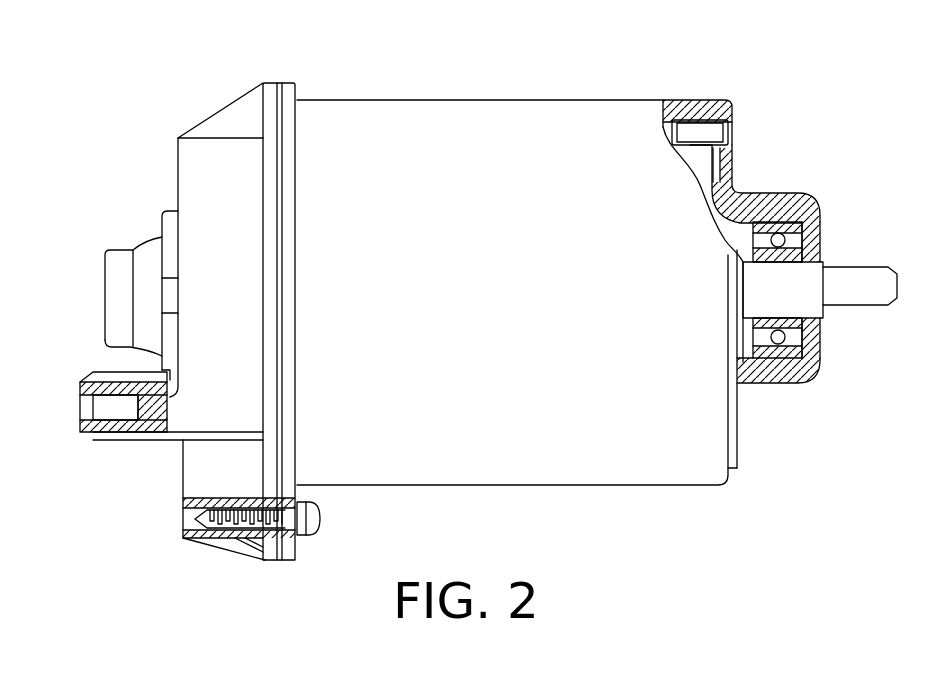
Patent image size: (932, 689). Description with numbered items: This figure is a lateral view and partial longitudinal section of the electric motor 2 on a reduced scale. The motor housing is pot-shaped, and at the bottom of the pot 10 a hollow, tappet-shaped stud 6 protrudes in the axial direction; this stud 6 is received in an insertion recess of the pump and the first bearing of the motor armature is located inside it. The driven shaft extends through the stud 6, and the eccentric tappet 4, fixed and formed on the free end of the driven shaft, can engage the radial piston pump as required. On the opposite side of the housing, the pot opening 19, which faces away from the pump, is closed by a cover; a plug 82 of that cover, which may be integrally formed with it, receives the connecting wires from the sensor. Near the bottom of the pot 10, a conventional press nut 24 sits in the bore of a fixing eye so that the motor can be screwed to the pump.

The electric motor 2 is at (608, 97).
The eccentric tappet 4 is at (860, 272).
The hollow tappet-shaped stud 6 is at (785, 382).
The bottom of the pot 10 is at (732, 170).
The pot opening 19 is at (198, 150).
The press nut 24 is at (702, 100).
The plug 82 is at (128, 430).